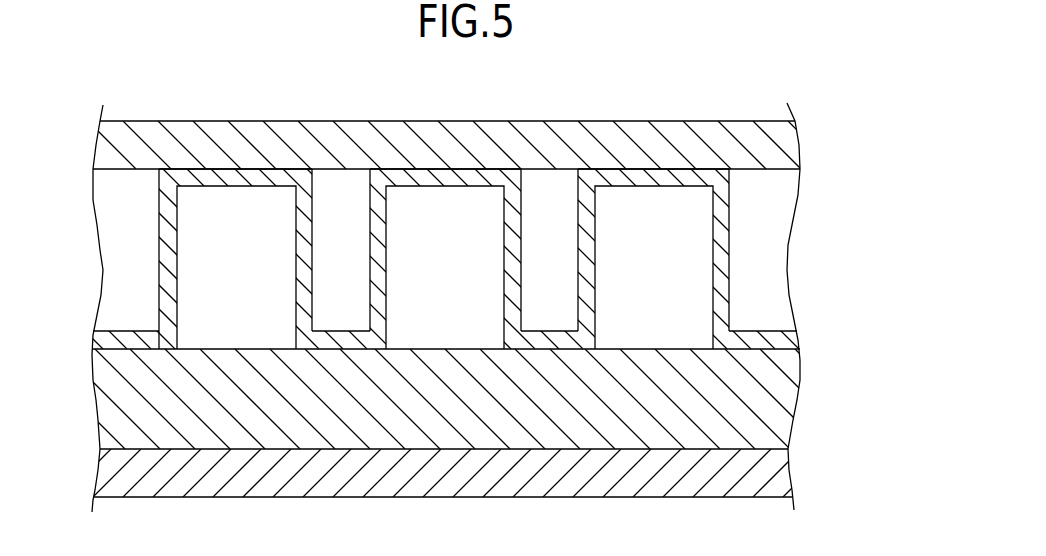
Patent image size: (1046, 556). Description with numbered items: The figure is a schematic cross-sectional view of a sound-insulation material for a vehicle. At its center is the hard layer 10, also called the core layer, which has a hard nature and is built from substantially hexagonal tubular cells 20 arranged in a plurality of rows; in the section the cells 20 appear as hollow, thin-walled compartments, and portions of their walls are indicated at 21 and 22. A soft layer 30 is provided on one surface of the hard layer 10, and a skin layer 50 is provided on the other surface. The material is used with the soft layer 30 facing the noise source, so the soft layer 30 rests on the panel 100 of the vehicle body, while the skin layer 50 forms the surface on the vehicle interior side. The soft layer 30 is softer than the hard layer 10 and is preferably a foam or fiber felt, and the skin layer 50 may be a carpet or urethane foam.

The hard layer 10 is at (792, 258).
The cell 20 is at (210, 233).
The upper portion of partition 21 is at (238, 167).
The lower connecting portion 22 is at (237, 347).
The soft layer 30 is at (782, 387).
The skin layer 50 is at (793, 137).
The panel 100 is at (787, 470).